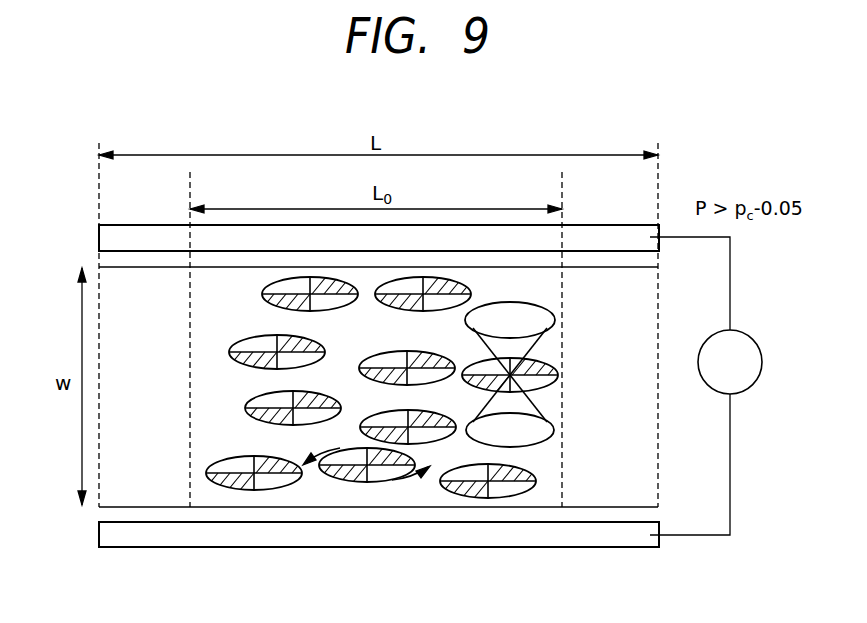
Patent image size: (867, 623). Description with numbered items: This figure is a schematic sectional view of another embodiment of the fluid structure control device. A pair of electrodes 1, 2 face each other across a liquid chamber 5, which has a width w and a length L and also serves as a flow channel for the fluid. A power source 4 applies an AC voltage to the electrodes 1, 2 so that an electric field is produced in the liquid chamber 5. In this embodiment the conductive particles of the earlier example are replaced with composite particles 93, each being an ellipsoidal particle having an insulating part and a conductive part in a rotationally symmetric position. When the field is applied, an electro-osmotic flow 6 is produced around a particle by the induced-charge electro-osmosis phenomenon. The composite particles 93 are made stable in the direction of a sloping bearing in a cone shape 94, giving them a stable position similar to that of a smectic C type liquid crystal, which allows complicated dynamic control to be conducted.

The electrode 1 is at (110, 237).
The electrode 2 is at (108, 537).
The power source 4 is at (750, 392).
The liquid chamber 5 is at (215, 281).
The electro-osmotic flow 6 is at (417, 468).
The composite particle 93 is at (458, 283).
The cone shape 94 is at (533, 435).